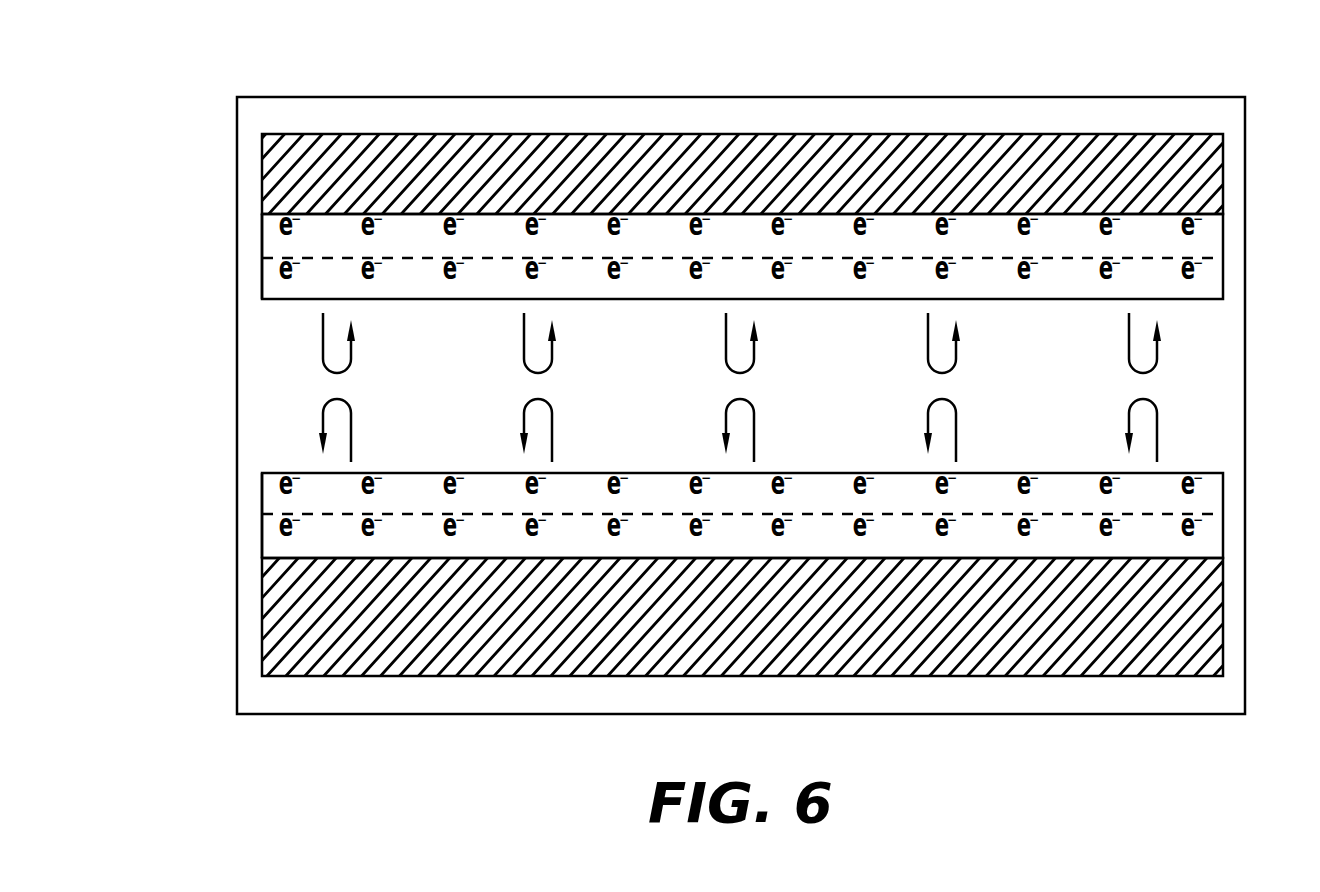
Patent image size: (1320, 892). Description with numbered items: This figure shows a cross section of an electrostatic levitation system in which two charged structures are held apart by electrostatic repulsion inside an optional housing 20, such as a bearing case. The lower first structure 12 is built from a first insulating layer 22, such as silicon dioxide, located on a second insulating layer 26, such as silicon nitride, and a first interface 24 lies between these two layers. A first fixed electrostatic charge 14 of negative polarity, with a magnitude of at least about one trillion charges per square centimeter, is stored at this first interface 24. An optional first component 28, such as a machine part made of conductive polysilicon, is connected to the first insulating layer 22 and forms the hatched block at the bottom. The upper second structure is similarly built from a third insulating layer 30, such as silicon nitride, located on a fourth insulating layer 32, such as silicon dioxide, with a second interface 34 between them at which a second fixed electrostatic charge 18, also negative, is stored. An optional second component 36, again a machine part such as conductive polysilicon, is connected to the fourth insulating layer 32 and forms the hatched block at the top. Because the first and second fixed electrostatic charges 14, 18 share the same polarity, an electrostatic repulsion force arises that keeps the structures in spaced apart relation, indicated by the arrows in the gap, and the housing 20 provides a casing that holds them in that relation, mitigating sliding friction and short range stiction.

The first structure 12 is at (717, 574).
The first fixed electrostatic charge 14 is at (238, 500).
The second fixed electrostatic charge 18 is at (238, 237).
The housing 20 is at (1223, 705).
The first insulating layer 22 is at (1218, 540).
The first interface 24 is at (1255, 512).
The second insulating layer 26 is at (1218, 486).
The first component 28 is at (1218, 660).
The third insulating layer 30 is at (1218, 283).
The fourth insulating layer 32 is at (1218, 228).
The second interface 34 is at (1255, 255).
The second component 36 is at (1218, 158).